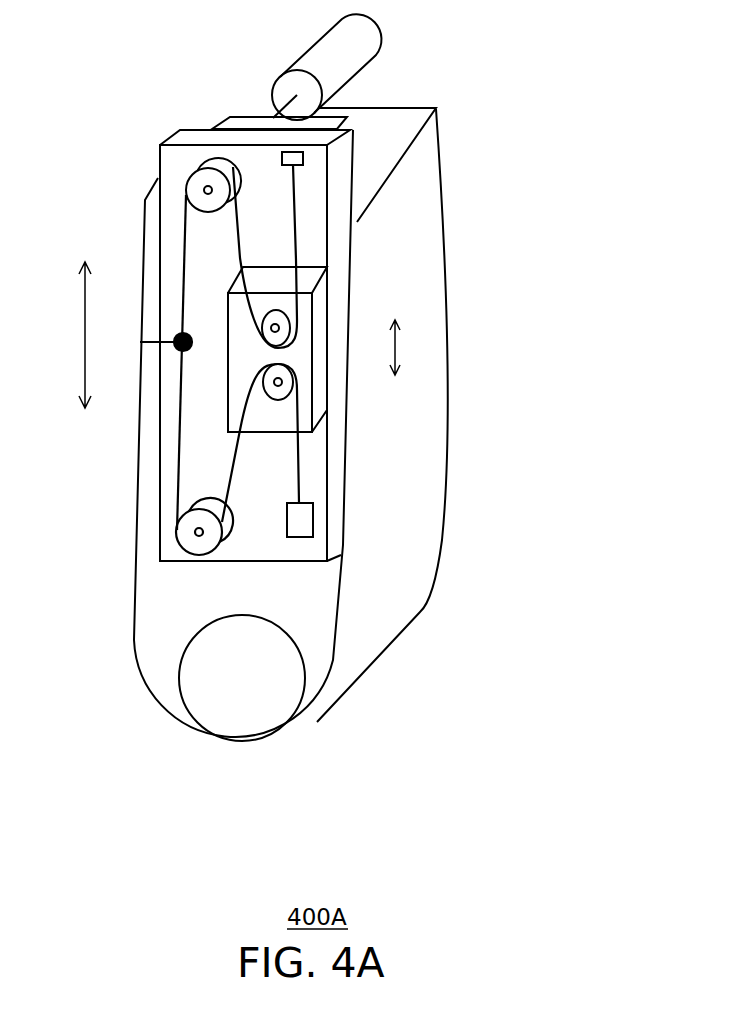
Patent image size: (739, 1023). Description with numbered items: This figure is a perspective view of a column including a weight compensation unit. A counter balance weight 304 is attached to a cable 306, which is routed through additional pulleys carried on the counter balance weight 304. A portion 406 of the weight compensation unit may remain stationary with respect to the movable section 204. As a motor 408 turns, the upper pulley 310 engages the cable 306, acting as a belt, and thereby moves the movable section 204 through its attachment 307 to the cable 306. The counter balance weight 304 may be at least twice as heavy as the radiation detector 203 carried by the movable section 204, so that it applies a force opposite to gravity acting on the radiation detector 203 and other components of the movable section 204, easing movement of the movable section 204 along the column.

The radiation detector 203 is at (177, 677).
The movable section 204 is at (397, 563).
The counter balance weight 304 is at (315, 327).
The cable 306 is at (300, 460).
The attachment 307 is at (167, 340).
The upper pulley 310 is at (206, 187).
The portion of the weight compensation unit 406 is at (357, 152).
The motor 408 is at (333, 35).